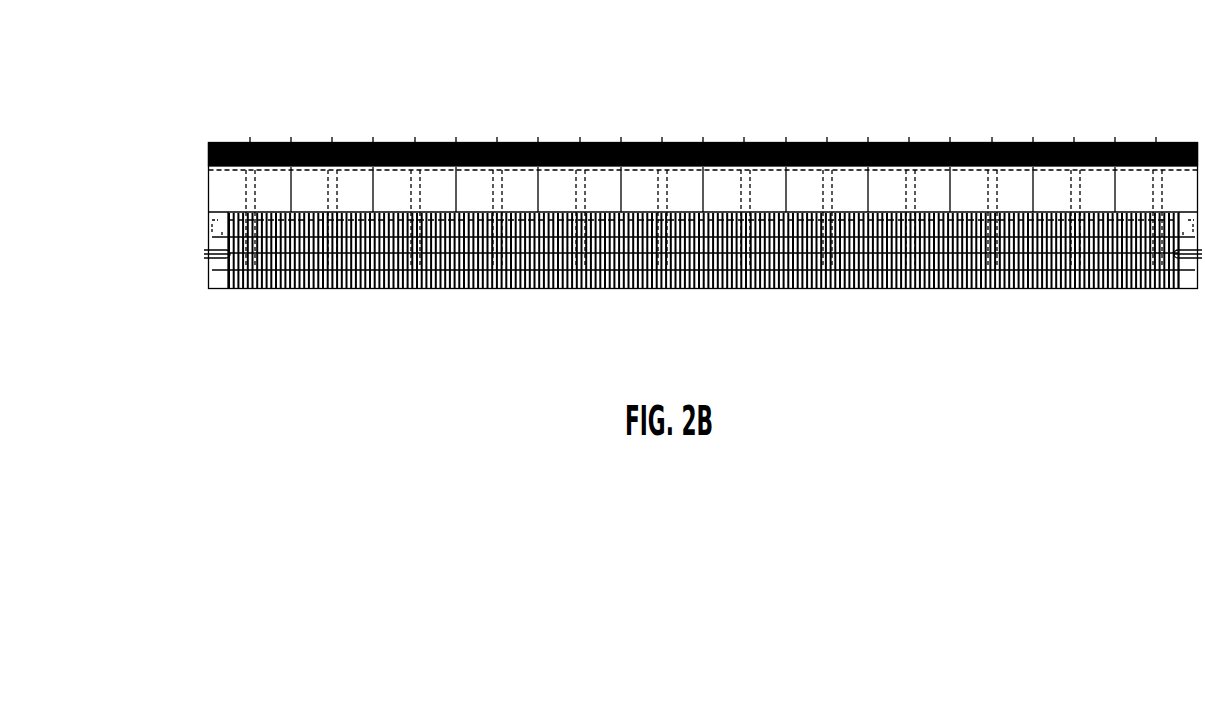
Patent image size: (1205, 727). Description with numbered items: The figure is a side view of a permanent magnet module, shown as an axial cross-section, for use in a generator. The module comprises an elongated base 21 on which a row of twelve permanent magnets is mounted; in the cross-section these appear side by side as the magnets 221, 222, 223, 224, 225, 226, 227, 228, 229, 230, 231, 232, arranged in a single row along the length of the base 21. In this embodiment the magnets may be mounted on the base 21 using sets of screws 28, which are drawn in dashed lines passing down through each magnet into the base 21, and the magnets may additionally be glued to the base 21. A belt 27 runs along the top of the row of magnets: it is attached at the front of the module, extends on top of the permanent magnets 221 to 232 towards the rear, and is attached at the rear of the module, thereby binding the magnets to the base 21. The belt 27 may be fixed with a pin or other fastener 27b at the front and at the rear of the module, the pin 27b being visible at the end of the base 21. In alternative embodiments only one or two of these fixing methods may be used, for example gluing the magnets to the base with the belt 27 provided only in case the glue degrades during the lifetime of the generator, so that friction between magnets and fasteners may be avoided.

The base 21 is at (218, 230).
The belt 27 is at (393, 142).
The pin 27b is at (204, 256).
The screws 28 is at (495, 193).
The magnet 221 is at (268, 188).
The magnet 222 is at (312, 188).
The magnet 223 is at (438, 188).
The magnet 224 is at (526, 188).
The magnet 225 is at (565, 188).
The magnet 226 is at (640, 188).
The magnet 227 is at (720, 188).
The magnet 228 is at (802, 188).
The magnet 229 is at (885, 188).
The magnet 230 is at (963, 188).
The magnet 231 is at (1042, 188).
The magnet 232 is at (1133, 188).